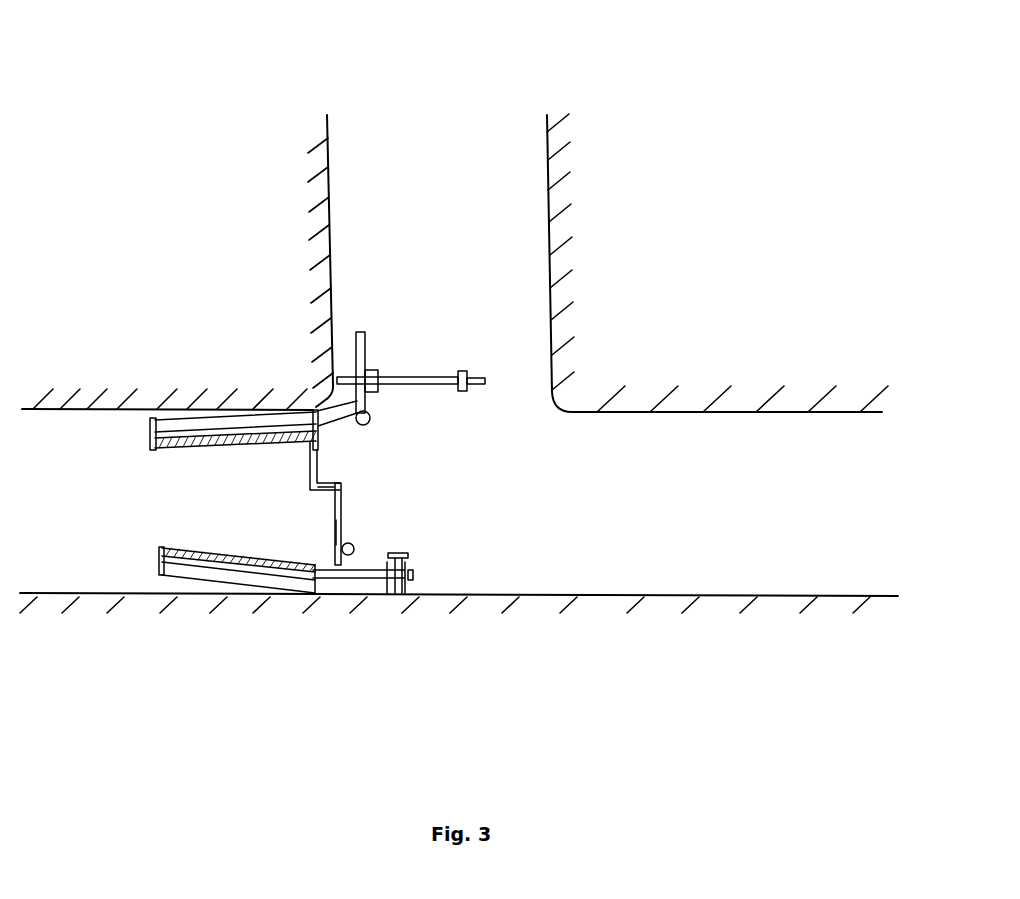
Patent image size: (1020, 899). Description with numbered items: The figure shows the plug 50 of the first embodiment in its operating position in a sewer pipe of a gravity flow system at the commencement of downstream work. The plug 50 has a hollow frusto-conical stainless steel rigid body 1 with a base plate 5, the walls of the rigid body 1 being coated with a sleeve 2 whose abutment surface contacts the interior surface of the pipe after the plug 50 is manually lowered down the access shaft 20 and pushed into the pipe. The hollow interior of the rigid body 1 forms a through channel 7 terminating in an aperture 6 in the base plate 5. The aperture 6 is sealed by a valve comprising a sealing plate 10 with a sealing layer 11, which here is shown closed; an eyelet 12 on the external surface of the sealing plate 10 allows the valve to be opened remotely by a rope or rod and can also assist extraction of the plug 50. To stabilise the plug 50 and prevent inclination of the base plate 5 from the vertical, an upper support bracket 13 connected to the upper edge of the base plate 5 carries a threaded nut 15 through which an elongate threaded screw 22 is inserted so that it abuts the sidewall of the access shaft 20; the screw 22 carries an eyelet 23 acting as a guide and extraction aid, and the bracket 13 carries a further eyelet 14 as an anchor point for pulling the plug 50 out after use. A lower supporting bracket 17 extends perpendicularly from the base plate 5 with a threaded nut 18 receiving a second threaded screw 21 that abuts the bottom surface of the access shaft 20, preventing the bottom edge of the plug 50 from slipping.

The rigid body 1 is at (165, 548).
The sleeve 2 is at (152, 430).
The base plate 5 is at (318, 457).
The aperture 6 is at (330, 485).
The through channel 7 is at (212, 488).
The sealing plate 10 is at (345, 504).
The sealing layer 11 is at (332, 530).
The eyelet 12 is at (355, 548).
The upper support bracket 13 is at (383, 338).
The eyelet 14 is at (373, 420).
The threaded nut 15 is at (378, 372).
The lower supporting bracket 17 is at (345, 580).
The threaded nut 18 is at (412, 565).
The access shaft 20 is at (462, 167).
The second threaded screw 21 is at (400, 585).
The elongate threaded screw 22 is at (388, 390).
The eyelet 23 is at (478, 372).
The plug 50 is at (464, 475).